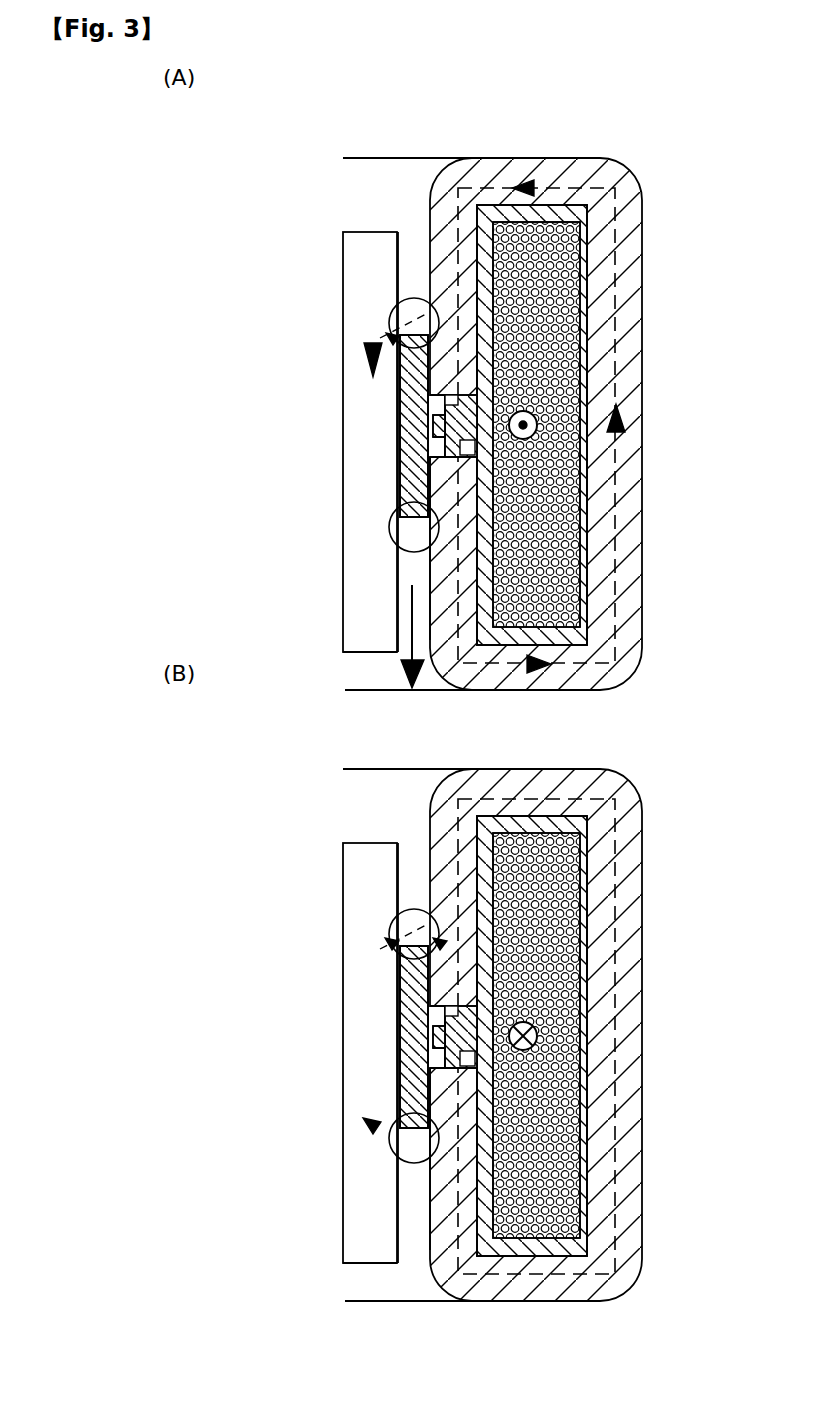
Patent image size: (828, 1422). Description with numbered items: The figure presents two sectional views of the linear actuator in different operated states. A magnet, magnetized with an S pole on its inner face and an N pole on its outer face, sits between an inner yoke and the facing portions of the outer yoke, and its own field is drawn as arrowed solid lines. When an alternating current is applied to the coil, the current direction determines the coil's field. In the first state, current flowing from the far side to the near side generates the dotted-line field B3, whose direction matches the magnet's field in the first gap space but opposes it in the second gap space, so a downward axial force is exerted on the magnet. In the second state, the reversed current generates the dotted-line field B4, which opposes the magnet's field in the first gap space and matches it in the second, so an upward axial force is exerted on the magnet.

The magnetic field line B3 is at (460, 540).
The magnetic field line B4 is at (460, 1151).